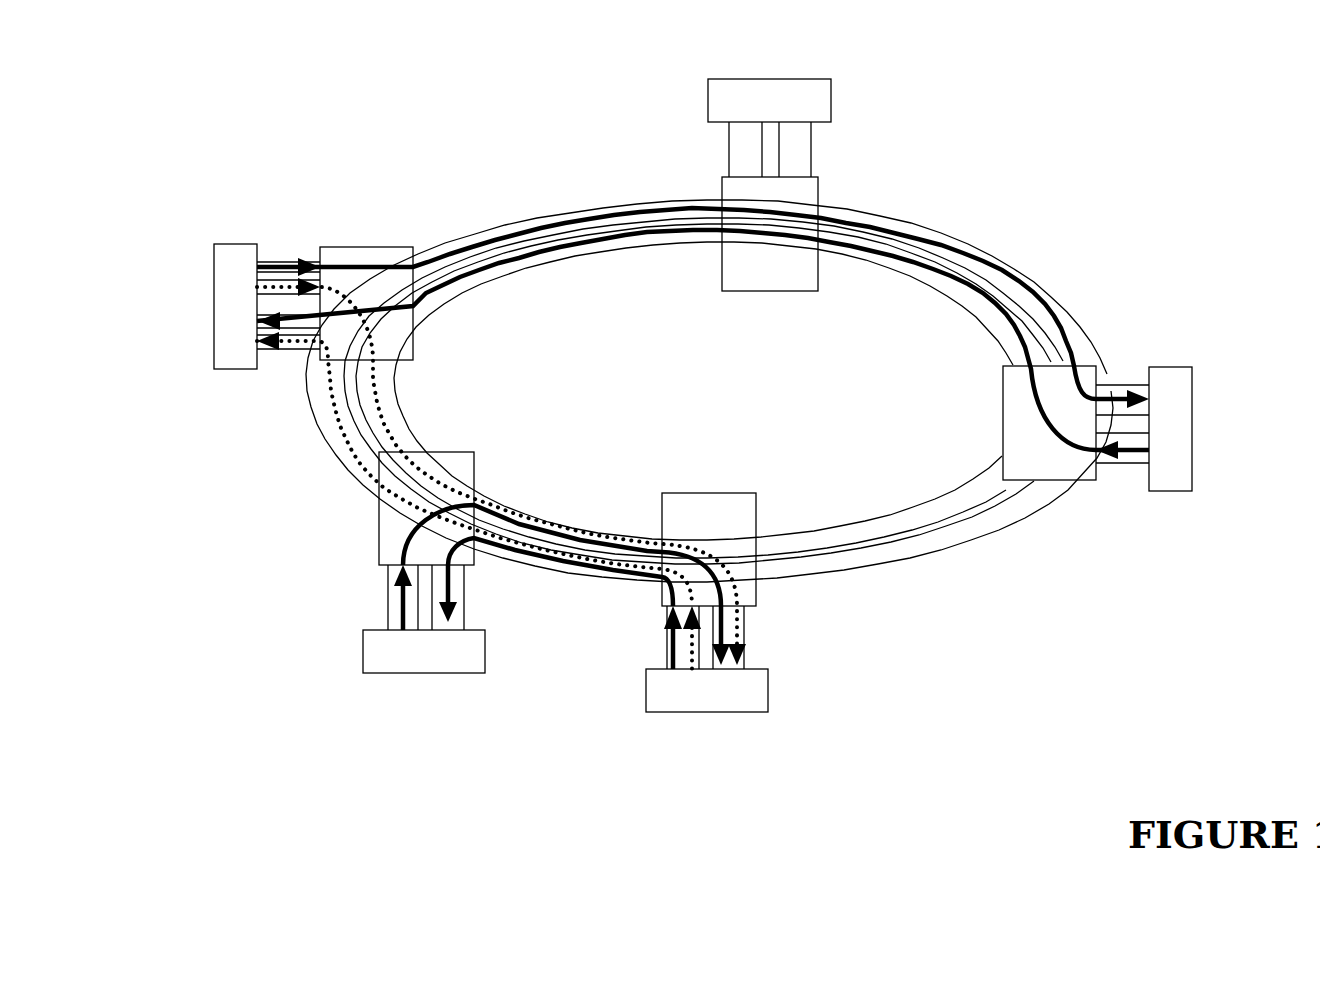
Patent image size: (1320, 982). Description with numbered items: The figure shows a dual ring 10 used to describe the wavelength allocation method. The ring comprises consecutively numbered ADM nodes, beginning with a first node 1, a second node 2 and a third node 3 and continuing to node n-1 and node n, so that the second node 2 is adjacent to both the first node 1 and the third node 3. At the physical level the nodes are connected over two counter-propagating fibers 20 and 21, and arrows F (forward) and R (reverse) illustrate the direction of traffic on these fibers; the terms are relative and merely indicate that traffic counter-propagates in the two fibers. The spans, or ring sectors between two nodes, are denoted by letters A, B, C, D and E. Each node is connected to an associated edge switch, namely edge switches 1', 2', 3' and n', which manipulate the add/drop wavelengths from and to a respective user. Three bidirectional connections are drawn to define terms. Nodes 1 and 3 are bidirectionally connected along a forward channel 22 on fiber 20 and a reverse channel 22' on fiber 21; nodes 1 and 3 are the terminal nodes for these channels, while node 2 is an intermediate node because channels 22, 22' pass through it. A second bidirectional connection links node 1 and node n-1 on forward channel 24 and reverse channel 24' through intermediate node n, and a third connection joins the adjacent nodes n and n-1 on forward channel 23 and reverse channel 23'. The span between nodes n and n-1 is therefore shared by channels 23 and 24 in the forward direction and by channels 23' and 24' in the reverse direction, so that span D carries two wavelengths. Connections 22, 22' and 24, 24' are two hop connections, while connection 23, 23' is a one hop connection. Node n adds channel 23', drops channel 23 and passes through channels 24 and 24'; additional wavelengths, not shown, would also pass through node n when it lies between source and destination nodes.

The dual ring 10 is at (767, 386).
The first node 1 is at (360, 262).
The edge switch 1' is at (254, 327).
The second node 2 is at (799, 203).
The edge switch 2' is at (831, 104).
The third node 3 is at (1076, 467).
The edge switch 3' is at (1178, 401).
The node n is at (395, 546).
The edge switch n' is at (393, 660).
The fiber 20 is at (1007, 520).
The fiber 21 is at (953, 473).
The forward channel 22 is at (703, 268).
The reverse channel 22' is at (703, 344).
The forward channel 23 is at (562, 586).
The reverse channel 23' is at (560, 603).
The forward channel 24 is at (479, 500).
The reverse channel 24' is at (501, 471).
The span A is at (501, 177).
The span B is at (926, 179).
The span C is at (967, 585).
The span D is at (572, 653).
The span E is at (314, 507).
The forward direction arrow F is at (968, 230).
The reverse direction arrow R is at (947, 318).